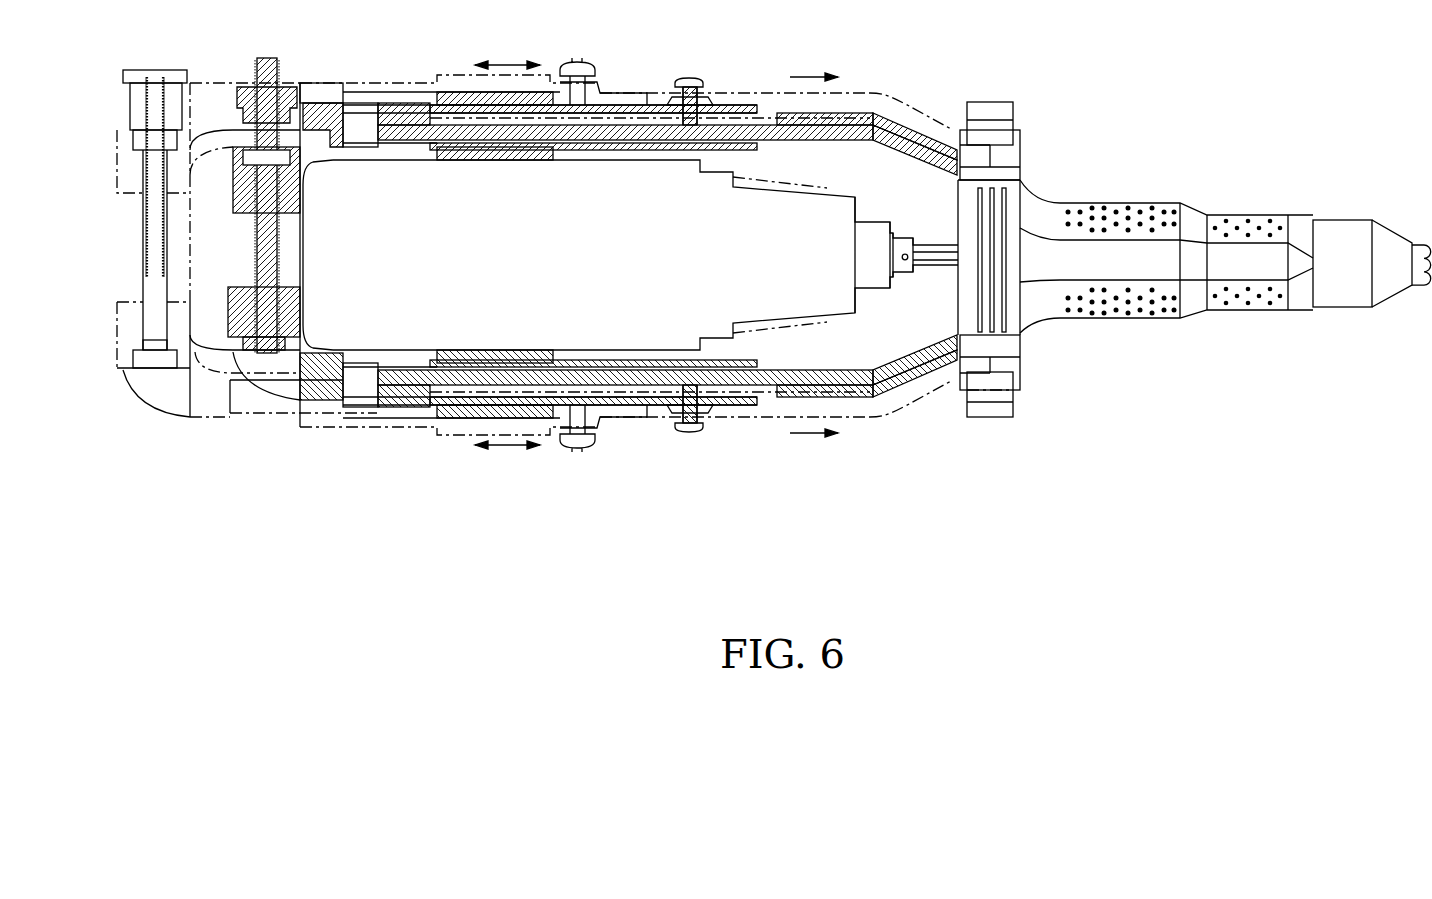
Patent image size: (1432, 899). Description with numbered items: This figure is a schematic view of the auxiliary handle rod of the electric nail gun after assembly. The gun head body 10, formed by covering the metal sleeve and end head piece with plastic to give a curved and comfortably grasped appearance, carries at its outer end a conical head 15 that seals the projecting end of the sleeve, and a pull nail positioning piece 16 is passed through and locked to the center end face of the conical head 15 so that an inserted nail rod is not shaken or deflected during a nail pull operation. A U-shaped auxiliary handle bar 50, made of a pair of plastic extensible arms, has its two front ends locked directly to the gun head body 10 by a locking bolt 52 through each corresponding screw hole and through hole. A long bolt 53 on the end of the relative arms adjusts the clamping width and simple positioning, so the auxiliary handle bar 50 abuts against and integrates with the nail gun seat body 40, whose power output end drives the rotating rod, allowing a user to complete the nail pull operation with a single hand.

The gun head body 10 is at (1055, 213).
The conical head 15 is at (1337, 227).
The pull nail positioning piece 16 is at (1425, 243).
The nail gun seat body 40 is at (795, 210).
The auxiliary handle bar 50 is at (257, 420).
The locking bolt 52 is at (983, 395).
The long bolt 53 is at (257, 245).